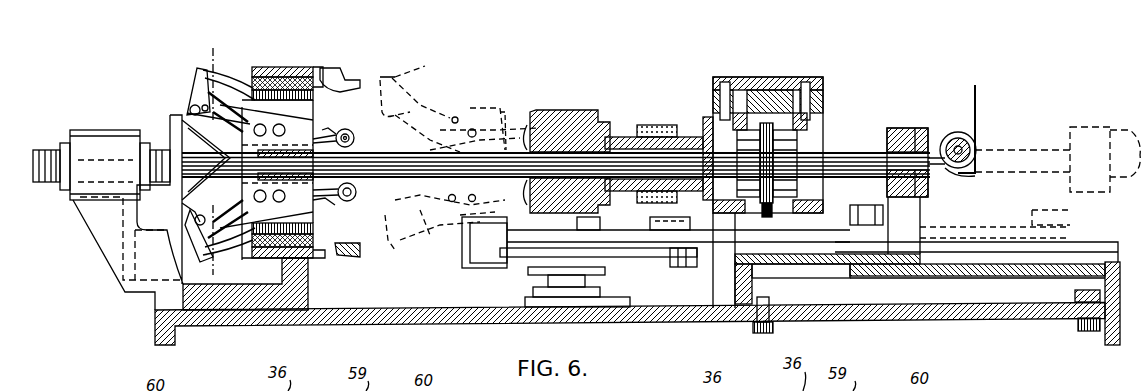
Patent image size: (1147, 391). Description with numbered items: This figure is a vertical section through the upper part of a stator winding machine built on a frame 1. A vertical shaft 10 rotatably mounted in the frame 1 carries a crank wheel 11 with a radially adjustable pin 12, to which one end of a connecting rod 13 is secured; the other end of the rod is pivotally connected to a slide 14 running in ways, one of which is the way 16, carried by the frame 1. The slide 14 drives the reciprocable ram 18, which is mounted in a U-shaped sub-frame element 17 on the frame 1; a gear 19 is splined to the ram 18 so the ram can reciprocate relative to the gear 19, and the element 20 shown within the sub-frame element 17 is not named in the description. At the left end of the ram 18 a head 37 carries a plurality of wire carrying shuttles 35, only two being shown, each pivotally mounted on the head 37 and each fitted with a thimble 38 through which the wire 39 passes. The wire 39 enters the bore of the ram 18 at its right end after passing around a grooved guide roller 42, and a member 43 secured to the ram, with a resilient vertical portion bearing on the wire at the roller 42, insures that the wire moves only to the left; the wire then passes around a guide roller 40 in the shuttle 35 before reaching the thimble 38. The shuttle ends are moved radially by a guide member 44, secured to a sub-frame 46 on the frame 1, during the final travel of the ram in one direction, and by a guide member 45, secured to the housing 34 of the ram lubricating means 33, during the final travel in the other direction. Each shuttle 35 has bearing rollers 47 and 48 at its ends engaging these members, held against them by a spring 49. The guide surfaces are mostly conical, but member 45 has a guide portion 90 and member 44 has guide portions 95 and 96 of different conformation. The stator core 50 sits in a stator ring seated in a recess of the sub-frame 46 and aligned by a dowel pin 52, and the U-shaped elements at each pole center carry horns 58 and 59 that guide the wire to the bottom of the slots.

The frame 1 is at (468, 320).
The vertical shaft 10 is at (600, 280).
The crank wheel 11 is at (668, 258).
The radially adjustable pin 12 is at (464, 226).
The connecting rod 13 is at (597, 233).
The slide 14 is at (908, 128).
The way 16 is at (992, 242).
The U-shaped sub-frame element 17 is at (823, 86).
The reciprocable ram 18 is at (855, 153).
The gear 19 is at (769, 214).
The inner block 20 is at (770, 90).
The ram lubricating means 33 is at (660, 125).
The housing 34 is at (615, 137).
The wire carrying shuttle 35 is at (336, 136).
The head 37 is at (503, 112).
The thimble 38 is at (200, 68).
The wire 39 is at (976, 102).
The guide roller 40 is at (163, 255).
The grooved guide roller 42 is at (958, 132).
The member 43 is at (985, 150).
The guide member 44 is at (170, 126).
The guide member 45 is at (548, 110).
The sub-frame 46 is at (95, 228).
The bearing roller 47 is at (190, 108).
The bearing roller 48 is at (352, 136).
The spring 49 is at (252, 100).
The stator core 50 is at (288, 67).
The dowel pin 52 is at (308, 276).
The horn 58 is at (228, 76).
The horn 59 is at (356, 79).
The guide portion 90 is at (528, 125).
The guide portion 95 is at (182, 203).
The guide portion 96 is at (213, 196).